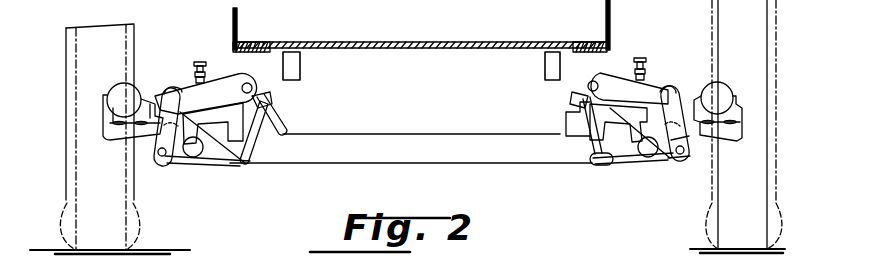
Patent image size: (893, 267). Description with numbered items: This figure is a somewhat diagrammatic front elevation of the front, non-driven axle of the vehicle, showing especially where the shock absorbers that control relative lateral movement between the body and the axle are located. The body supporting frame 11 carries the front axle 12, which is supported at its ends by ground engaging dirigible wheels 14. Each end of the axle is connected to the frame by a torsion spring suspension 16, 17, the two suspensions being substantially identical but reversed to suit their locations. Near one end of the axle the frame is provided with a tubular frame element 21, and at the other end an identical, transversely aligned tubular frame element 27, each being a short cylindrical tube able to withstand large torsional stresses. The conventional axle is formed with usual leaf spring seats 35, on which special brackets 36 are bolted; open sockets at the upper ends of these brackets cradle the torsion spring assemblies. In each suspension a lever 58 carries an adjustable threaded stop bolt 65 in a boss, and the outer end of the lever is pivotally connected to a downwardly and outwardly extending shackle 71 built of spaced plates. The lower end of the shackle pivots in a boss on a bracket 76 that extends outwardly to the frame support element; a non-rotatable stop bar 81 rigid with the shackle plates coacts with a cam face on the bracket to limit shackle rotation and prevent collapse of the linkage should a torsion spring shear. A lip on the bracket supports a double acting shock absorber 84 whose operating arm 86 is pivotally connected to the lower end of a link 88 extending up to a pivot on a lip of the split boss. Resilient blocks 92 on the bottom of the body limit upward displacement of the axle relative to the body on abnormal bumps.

The body supporting frame 11 is at (542, 67).
The front axle 12 is at (517, 155).
The dirigible wheels 14 is at (138, 225).
The torsion spring suspension 16 is at (612, 72).
The torsion spring suspension 17 is at (233, 75).
The tubular frame element 21 is at (720, 84).
The tubular frame element 27 is at (131, 85).
The leaf spring seats 35 is at (284, 130).
The brackets 36 is at (230, 125).
The lever 58 is at (185, 78).
The stop bolt 65 is at (197, 62).
The link or shackle 71 is at (178, 110).
The bracket 76 is at (114, 135).
The stop bar 81 is at (668, 158).
The shock absorber 84 is at (193, 164).
The operating arm 86 is at (224, 168).
The link 88 is at (563, 112).
The resilient blocks 92 is at (262, 42).